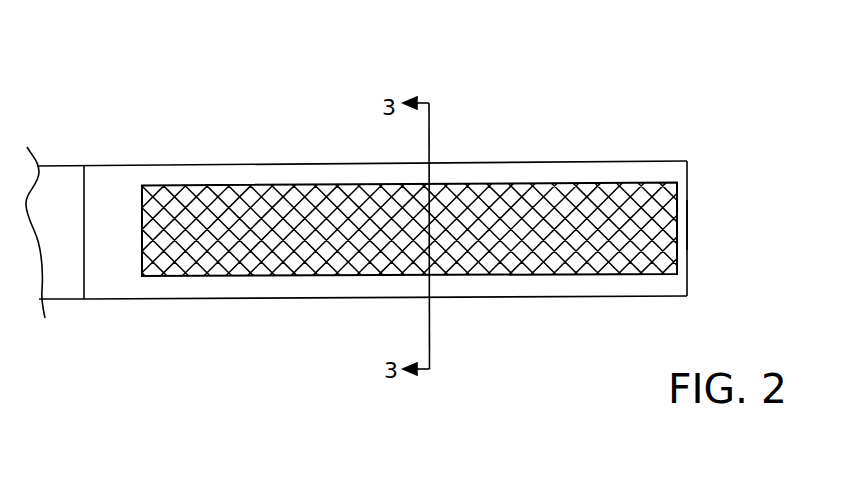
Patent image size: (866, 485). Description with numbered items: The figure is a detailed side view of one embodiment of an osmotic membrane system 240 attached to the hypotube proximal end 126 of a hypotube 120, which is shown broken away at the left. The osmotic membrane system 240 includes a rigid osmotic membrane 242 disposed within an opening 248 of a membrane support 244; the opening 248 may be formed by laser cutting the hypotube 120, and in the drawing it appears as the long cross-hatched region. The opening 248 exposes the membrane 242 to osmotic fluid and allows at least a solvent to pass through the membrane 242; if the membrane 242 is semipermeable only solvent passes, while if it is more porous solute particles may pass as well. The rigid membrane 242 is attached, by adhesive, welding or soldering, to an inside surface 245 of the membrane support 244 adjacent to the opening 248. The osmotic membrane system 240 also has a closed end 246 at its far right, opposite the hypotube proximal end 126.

The hypotube 120 is at (57, 289).
The hypotube proximal end 126 is at (70, 152).
The osmotic membrane system 240 is at (575, 68).
The rigid osmotic membrane 242 is at (613, 175).
The membrane support 244 is at (130, 173).
The inside surface 245 is at (166, 479).
The closed end 246 is at (688, 225).
The opening 248 is at (190, 283).